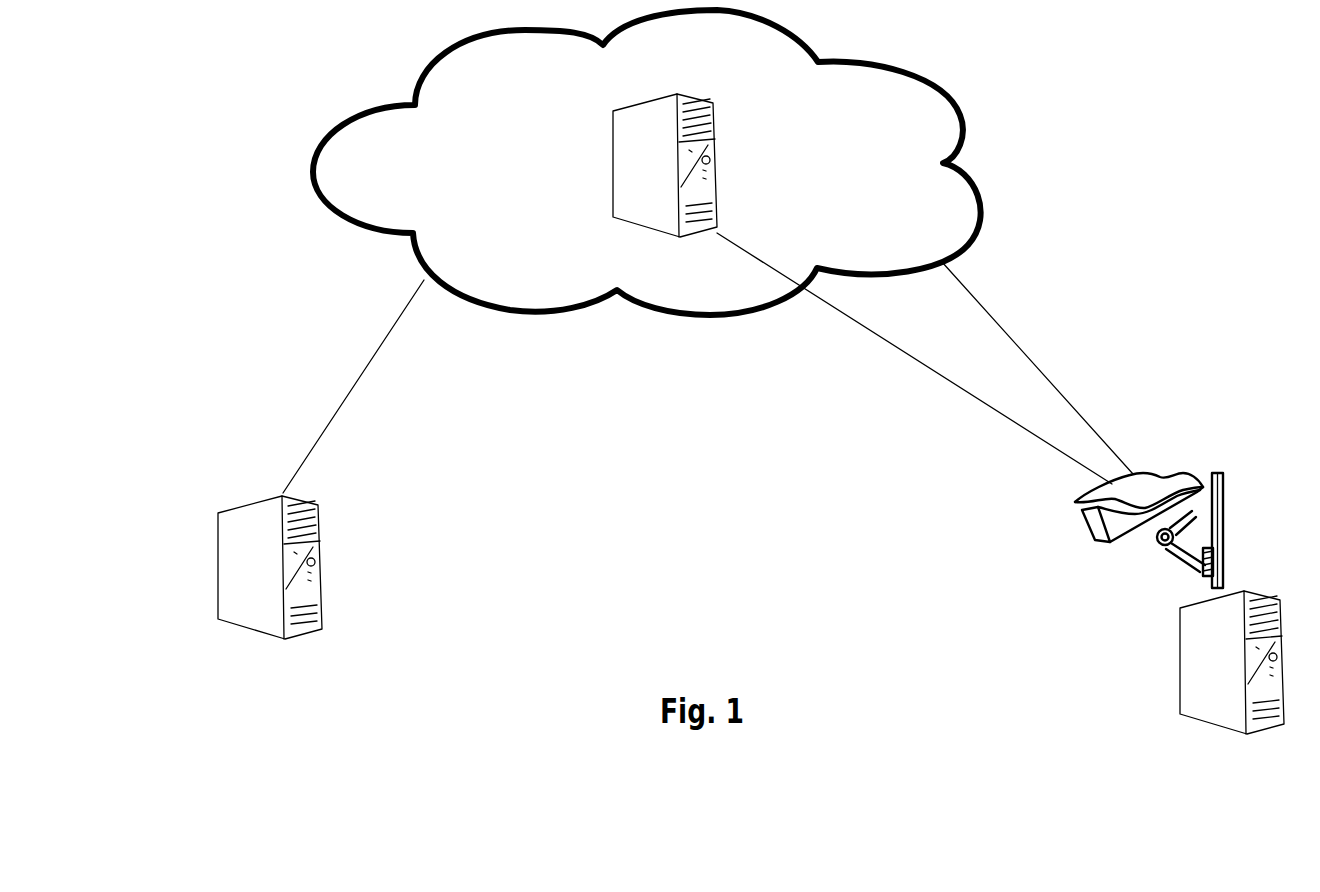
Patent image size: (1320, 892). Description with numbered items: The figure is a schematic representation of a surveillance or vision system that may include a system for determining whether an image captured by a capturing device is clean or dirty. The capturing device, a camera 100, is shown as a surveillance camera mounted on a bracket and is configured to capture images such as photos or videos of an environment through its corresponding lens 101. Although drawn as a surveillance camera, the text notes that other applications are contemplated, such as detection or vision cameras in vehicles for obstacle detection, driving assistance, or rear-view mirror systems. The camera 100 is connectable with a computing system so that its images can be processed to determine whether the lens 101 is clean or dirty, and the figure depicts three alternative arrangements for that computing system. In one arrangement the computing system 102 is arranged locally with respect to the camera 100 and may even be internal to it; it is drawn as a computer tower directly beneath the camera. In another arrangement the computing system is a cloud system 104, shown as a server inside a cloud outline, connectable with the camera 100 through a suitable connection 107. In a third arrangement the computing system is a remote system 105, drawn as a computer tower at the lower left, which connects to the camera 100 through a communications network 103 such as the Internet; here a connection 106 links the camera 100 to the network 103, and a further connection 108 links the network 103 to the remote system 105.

The capturing device 100 is at (1095, 486).
The lens 101 is at (1083, 528).
The computing system 102 is at (1195, 660).
The communications network 103 is at (965, 110).
The cloud system 104 is at (632, 157).
The remote system 105 is at (233, 568).
The connection 106 is at (1022, 350).
The connection 107 is at (945, 380).
The connection 108 is at (353, 388).